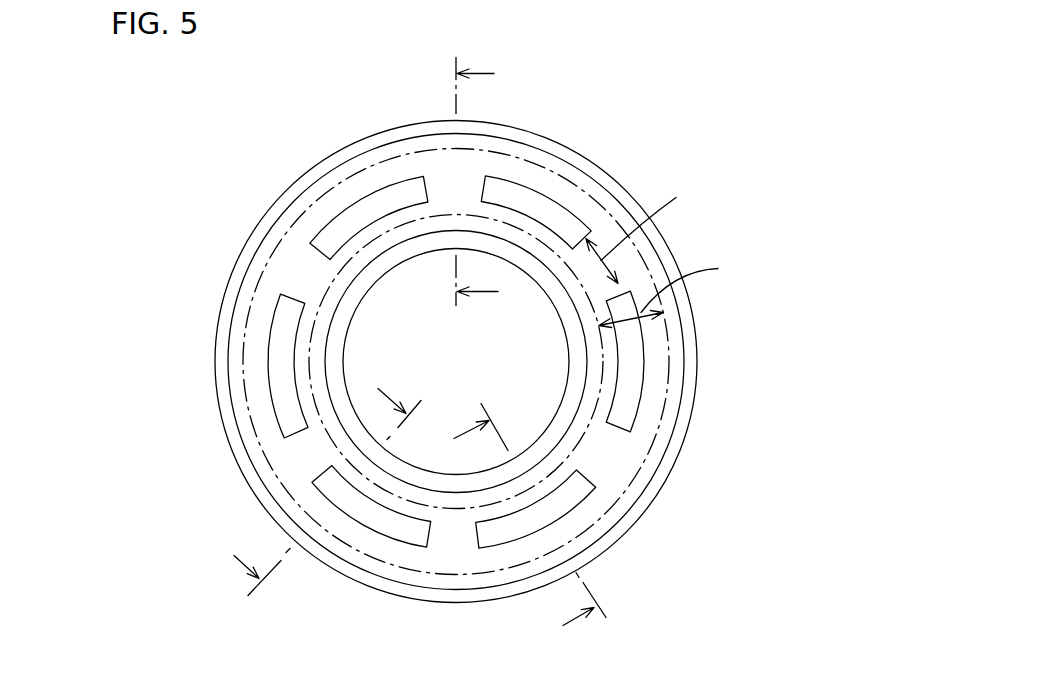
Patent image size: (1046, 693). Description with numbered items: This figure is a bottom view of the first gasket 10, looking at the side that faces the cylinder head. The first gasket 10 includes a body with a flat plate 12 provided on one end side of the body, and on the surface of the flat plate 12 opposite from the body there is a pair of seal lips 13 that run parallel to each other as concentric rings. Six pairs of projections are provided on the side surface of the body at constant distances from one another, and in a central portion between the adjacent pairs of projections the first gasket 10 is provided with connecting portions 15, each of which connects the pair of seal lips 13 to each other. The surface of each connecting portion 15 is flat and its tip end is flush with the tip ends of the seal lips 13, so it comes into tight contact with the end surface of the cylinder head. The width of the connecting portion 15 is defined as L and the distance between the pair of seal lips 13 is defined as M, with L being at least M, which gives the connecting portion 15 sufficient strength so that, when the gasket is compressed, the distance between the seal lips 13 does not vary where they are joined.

The first gasket 10 is at (468, 361).
The flat plate 12 is at (688, 412).
The seal lips 13 is at (670, 348).
The connecting portions 15 is at (300, 278).